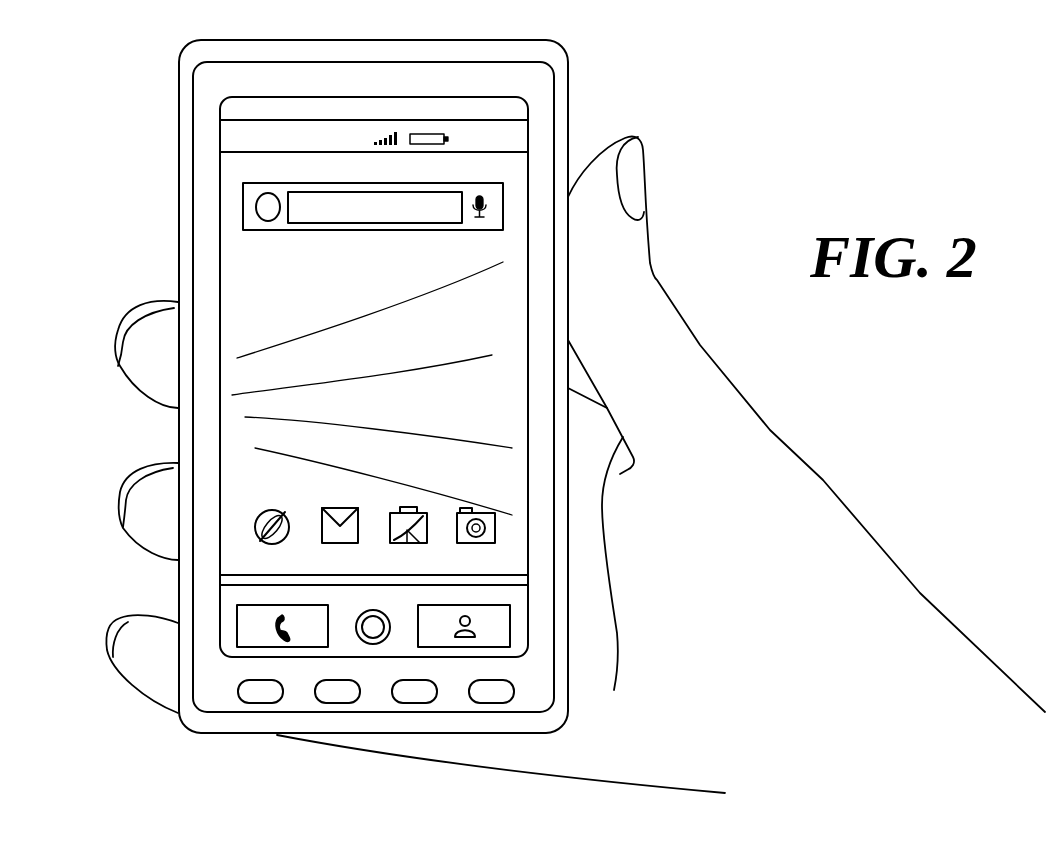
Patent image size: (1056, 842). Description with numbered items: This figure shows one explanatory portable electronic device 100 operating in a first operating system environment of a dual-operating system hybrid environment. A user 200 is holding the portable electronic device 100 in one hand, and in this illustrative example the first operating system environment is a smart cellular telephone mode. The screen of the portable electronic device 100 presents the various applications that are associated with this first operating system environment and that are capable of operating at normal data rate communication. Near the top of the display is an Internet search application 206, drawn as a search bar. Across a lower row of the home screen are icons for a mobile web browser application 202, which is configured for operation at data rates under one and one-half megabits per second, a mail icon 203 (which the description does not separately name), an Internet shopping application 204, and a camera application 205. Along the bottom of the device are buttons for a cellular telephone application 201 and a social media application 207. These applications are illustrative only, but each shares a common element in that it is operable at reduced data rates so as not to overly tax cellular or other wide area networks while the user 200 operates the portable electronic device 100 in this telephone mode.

The portable electronic device 100 is at (185, 152).
The user 200 is at (773, 487).
The cellular telephone application 201 is at (257, 627).
The mobile web browser application 202 is at (266, 510).
The mail icon 203 is at (341, 506).
The Internet shopping application 204 is at (405, 506).
The camera application 205 is at (465, 508).
The Internet search application 206 is at (394, 212).
The social media application 207 is at (497, 625).